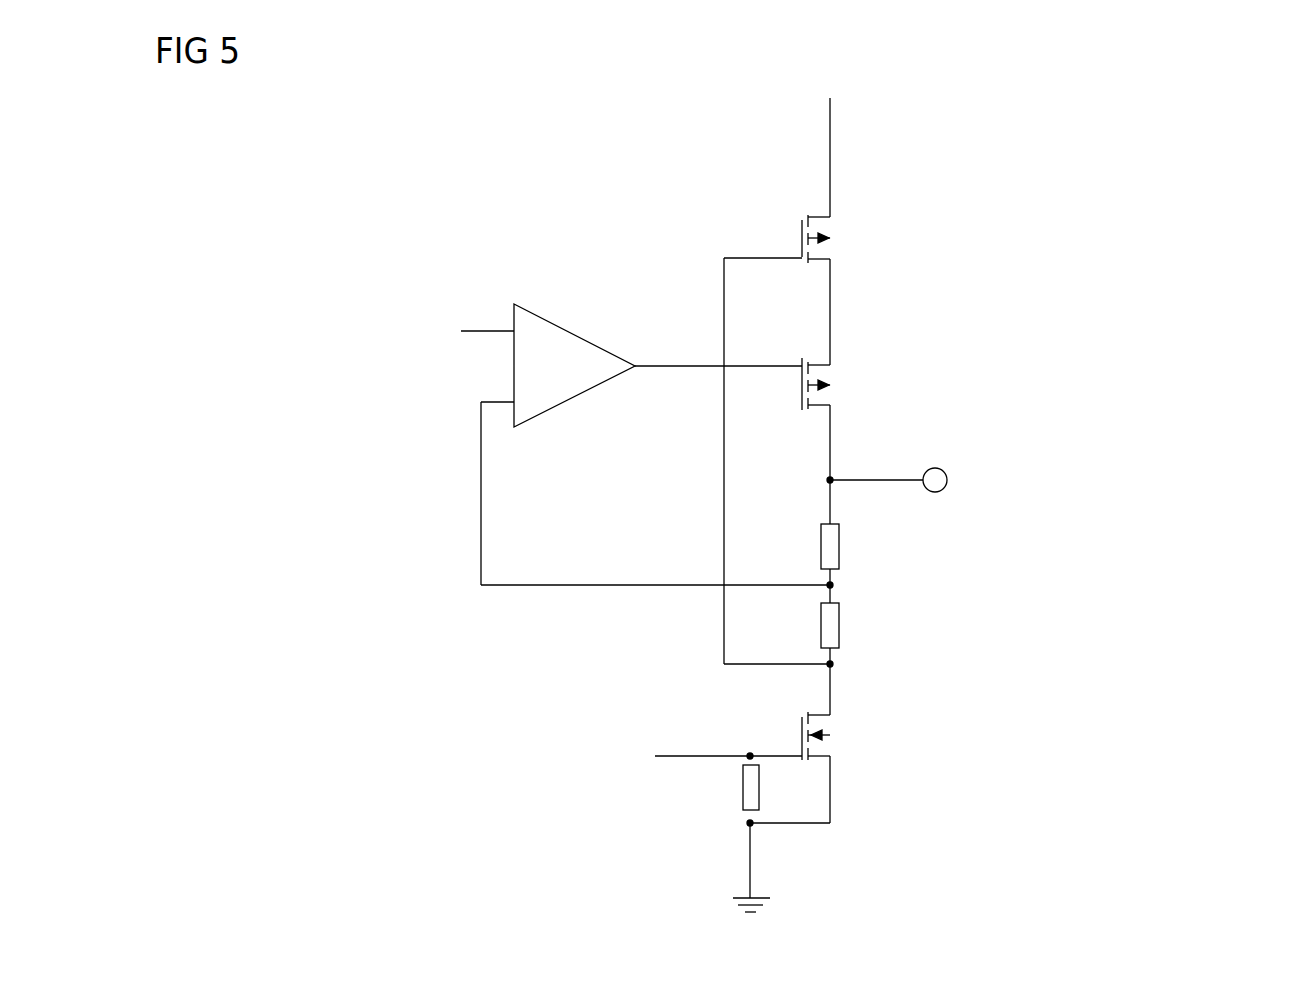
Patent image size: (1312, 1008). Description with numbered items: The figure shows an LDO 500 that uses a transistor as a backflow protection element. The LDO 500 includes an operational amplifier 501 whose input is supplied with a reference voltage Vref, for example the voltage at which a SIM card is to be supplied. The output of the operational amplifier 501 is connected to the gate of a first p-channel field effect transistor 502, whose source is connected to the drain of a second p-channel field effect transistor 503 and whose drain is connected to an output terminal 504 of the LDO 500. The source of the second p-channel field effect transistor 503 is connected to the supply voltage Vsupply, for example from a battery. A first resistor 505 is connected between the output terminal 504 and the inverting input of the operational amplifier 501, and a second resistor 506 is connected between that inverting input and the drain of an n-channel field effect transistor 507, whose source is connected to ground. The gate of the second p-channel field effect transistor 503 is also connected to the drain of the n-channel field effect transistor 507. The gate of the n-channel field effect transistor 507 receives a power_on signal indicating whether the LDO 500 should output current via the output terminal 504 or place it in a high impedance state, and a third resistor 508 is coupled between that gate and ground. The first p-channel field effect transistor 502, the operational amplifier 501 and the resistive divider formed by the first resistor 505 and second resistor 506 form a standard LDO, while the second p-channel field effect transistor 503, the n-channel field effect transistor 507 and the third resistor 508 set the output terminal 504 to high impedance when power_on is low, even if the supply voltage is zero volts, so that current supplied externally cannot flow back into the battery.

The LDO 500 is at (1192, 120).
The operational amplifier 501 is at (580, 337).
The first p-channel field effect transistor 502 is at (835, 380).
The second p-channel field effect transistor 503 is at (835, 225).
The output terminal 504 is at (942, 463).
The first resistor 505 is at (837, 553).
The second resistor 506 is at (837, 623).
The n-channel field effect transistor 507 is at (835, 733).
The third resistor 508 is at (748, 755).